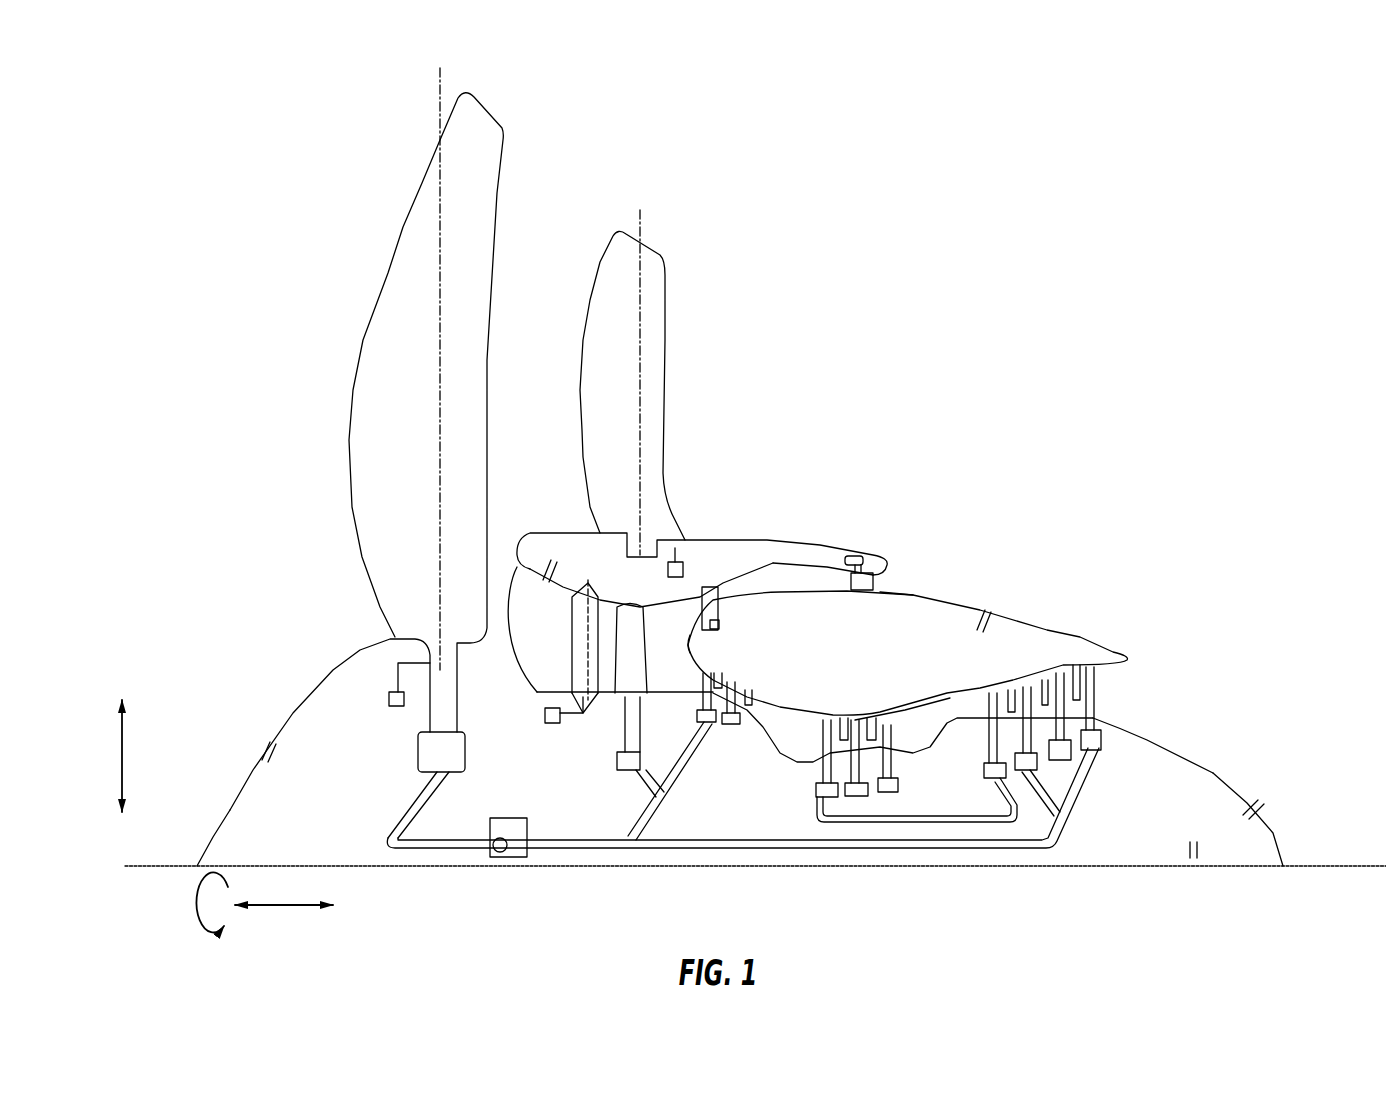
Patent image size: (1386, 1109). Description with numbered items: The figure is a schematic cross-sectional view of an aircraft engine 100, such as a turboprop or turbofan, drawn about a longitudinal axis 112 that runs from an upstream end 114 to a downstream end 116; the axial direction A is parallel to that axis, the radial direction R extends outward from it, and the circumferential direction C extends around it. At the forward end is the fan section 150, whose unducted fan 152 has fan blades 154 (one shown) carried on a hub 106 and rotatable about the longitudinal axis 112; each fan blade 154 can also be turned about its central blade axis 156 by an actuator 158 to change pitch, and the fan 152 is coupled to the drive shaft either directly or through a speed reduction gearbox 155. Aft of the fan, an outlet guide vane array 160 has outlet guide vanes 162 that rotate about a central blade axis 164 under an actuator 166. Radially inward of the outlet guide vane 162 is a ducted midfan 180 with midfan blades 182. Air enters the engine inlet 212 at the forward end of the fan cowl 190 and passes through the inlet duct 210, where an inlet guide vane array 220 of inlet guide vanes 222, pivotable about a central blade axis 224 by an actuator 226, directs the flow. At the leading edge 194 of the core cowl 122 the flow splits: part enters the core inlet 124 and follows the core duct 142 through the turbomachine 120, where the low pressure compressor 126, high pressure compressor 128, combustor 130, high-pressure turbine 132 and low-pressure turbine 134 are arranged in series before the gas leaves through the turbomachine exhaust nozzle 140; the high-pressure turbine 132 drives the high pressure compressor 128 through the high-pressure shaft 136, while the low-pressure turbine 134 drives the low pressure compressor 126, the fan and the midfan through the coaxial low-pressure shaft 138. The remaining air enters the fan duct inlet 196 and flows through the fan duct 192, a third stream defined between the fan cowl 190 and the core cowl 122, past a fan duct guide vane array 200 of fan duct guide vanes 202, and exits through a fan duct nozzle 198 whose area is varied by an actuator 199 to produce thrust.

The engine 100 is at (938, 350).
The hub 106 is at (305, 710).
The longitudinal axis 112 is at (152, 868).
The upstream end 114 is at (197, 866).
The downstream end 116 is at (1285, 860).
The turbomachine 120 is at (947, 578).
The core cowl 122 is at (843, 660).
The core inlet 124 is at (696, 680).
The low pressure compressor 126 is at (729, 739).
The high pressure compressor 128 is at (896, 797).
The combustor 130 is at (921, 735).
The high-pressure turbine 132 is at (996, 658).
The low-pressure turbine 134 is at (1069, 653).
The high-pressure shaft 136 is at (925, 825).
The low-pressure shaft 138 is at (1030, 848).
The turbomachine exhaust nozzle 140 is at (1138, 690).
The core duct 142 is at (938, 718).
The fan section 150 is at (290, 333).
The fan 152 is at (217, 480).
The fan blade 154 is at (390, 270).
The speed reduction gearbox 155 is at (512, 860).
The central blade axis 156 is at (440, 108).
The actuator 158 is at (388, 702).
The outlet guide vane array 160 is at (570, 238).
The outlet guide vane 162 is at (670, 362).
The central blade axis 164 is at (642, 233).
The actuator 166 is at (688, 562).
The ducted midfan 180 is at (617, 588).
The midfan blade 182 is at (650, 684).
The fan cowl 190 is at (737, 548).
The fan duct 192 is at (829, 576).
The leading edge 194 is at (688, 640).
The fan duct inlet 196 is at (695, 610).
The fan duct nozzle 198 is at (898, 583).
The actuator 199 is at (851, 552).
The fan duct guide vane array 200 is at (752, 588).
The fan duct guide vane 202 is at (703, 602).
The inlet duct 210 is at (503, 619).
The engine inlet 212 is at (505, 581).
The inlet guide vane array 220 is at (556, 667).
The inlet guide vane 222 is at (572, 620).
The central blade axis 224 is at (587, 660).
The actuator 226 is at (553, 727).
The radial direction R is at (120, 750).
The axial direction A is at (272, 905).
The circumferential direction C is at (215, 935).